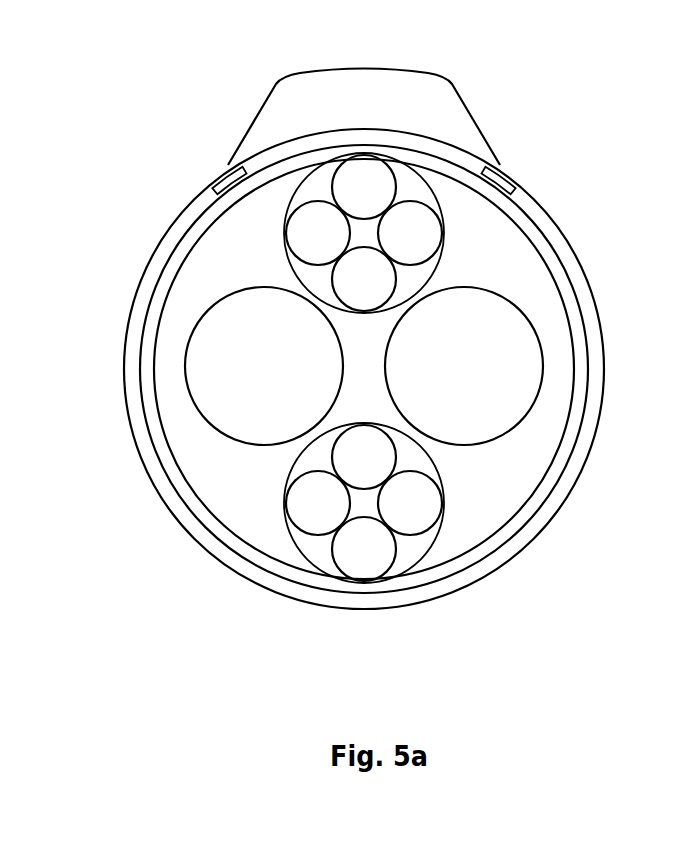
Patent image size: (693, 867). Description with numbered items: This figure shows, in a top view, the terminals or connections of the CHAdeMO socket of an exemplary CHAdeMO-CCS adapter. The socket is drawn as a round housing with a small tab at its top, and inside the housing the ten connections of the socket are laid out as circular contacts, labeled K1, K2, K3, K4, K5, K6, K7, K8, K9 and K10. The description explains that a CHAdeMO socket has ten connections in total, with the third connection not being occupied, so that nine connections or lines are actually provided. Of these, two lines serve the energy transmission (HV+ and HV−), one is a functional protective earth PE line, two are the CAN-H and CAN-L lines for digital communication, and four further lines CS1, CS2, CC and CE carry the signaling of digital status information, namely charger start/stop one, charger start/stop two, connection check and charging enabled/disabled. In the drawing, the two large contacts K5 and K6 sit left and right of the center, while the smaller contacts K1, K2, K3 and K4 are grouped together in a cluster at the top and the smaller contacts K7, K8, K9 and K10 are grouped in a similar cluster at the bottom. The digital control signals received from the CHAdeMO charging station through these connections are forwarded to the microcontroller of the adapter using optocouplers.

The contact K1 is at (364, 183).
The contact K2 is at (410, 233).
The contact K3 is at (318, 234).
The contact K4 is at (367, 282).
The contact K5 is at (505, 363).
The contact K6 is at (223, 365).
The contact K7 is at (365, 448).
The contact K8 is at (423, 505).
The contact K9 is at (305, 505).
The contact K10 is at (365, 547).